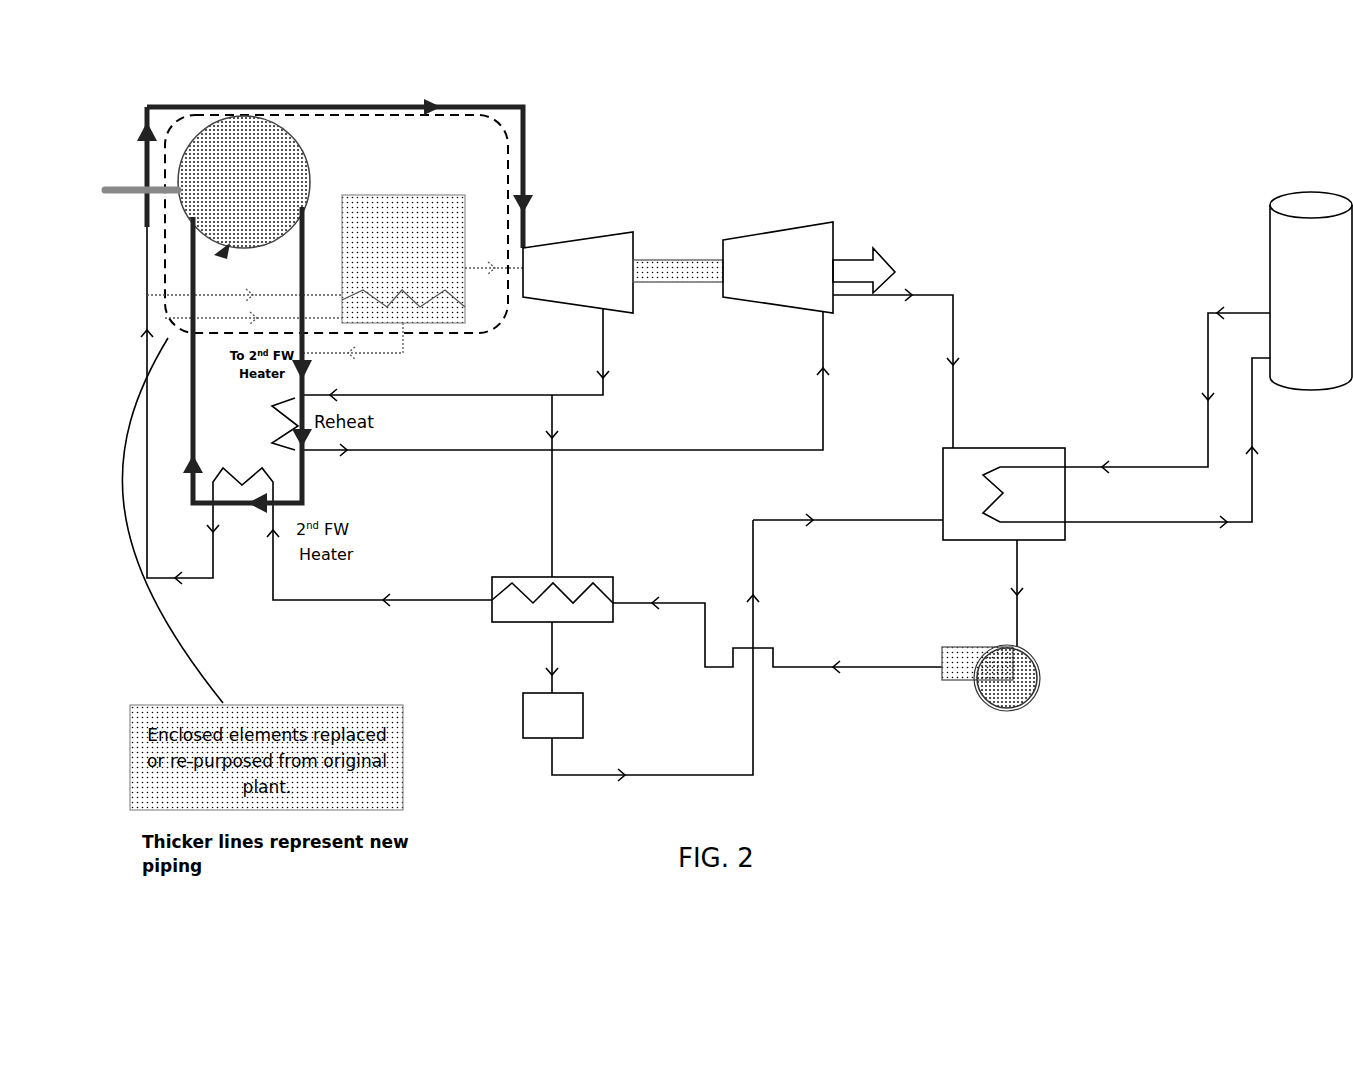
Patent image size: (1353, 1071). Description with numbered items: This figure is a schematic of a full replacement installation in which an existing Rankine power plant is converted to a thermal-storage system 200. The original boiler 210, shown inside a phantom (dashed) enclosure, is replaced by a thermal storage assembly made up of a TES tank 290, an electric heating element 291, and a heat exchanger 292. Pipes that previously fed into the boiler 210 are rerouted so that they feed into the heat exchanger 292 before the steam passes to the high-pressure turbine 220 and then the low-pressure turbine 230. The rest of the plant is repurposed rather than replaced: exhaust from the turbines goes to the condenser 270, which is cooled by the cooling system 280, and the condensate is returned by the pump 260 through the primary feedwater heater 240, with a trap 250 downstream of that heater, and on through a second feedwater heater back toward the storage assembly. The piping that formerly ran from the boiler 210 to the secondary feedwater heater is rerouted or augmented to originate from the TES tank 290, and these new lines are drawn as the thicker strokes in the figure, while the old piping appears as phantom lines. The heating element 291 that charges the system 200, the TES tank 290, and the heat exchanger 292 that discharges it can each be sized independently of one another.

The system 200 is at (1001, 165).
The boiler 210 is at (432, 259).
The high-pressure turbine 220 is at (587, 230).
The low-pressure turbine 230 is at (773, 220).
The primary feedwater heater 240 is at (575, 565).
The trap 250 is at (543, 740).
The pump 260 is at (1062, 687).
The condenser 270 is at (987, 423).
The cooling system 280 is at (1311, 318).
The TES tank 290 is at (297, 130).
The heating element 291 is at (222, 250).
The heat exchanger 292 is at (132, 183).